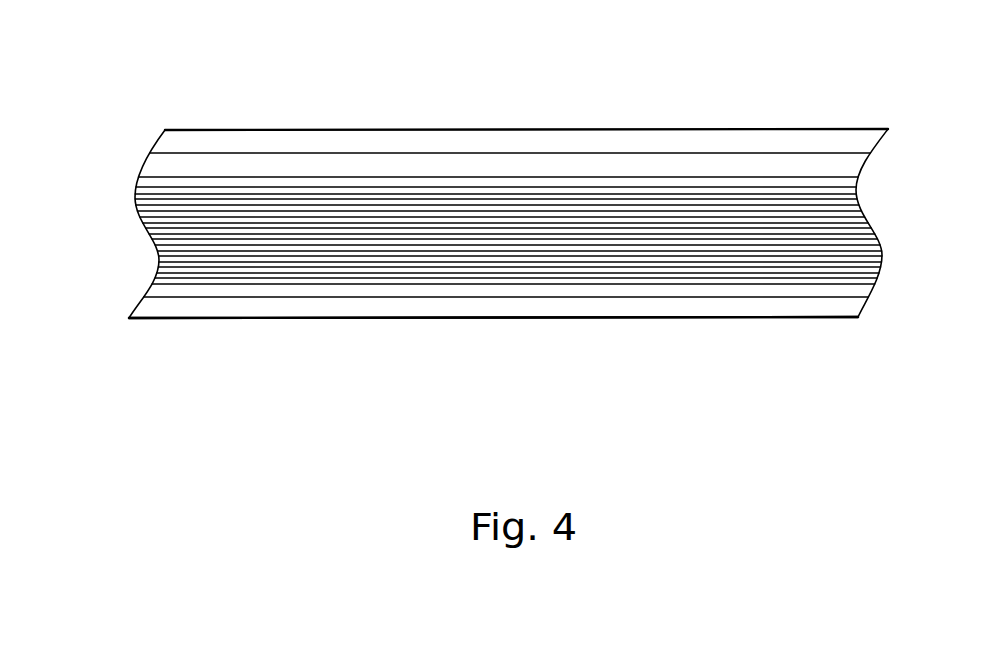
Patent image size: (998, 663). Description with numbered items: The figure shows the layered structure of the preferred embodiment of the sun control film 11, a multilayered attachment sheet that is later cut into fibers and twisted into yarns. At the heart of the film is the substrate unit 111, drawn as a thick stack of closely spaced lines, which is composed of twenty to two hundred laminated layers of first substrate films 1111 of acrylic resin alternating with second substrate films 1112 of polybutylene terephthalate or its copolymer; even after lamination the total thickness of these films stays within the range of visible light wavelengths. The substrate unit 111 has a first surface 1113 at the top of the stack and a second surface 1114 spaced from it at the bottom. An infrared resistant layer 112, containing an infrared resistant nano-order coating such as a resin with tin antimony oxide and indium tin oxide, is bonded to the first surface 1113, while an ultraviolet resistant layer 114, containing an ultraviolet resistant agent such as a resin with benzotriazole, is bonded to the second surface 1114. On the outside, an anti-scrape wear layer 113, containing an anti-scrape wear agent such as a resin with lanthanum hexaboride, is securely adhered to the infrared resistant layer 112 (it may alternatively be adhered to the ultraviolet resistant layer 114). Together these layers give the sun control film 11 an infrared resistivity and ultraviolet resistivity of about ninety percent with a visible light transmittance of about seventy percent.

The sun control film 11 is at (498, 212).
The substrate unit 111 is at (498, 259).
The first substrate film 1111 is at (845, 182).
The second substrate film 1112 is at (847, 190).
The first surface 1113 is at (173, 179).
The second surface 1114 is at (197, 297).
The infrared resistant layer 112 is at (830, 165).
The anti-scrape wear layer 113 is at (680, 142).
The ultraviolet resistant layer 114 is at (535, 308).